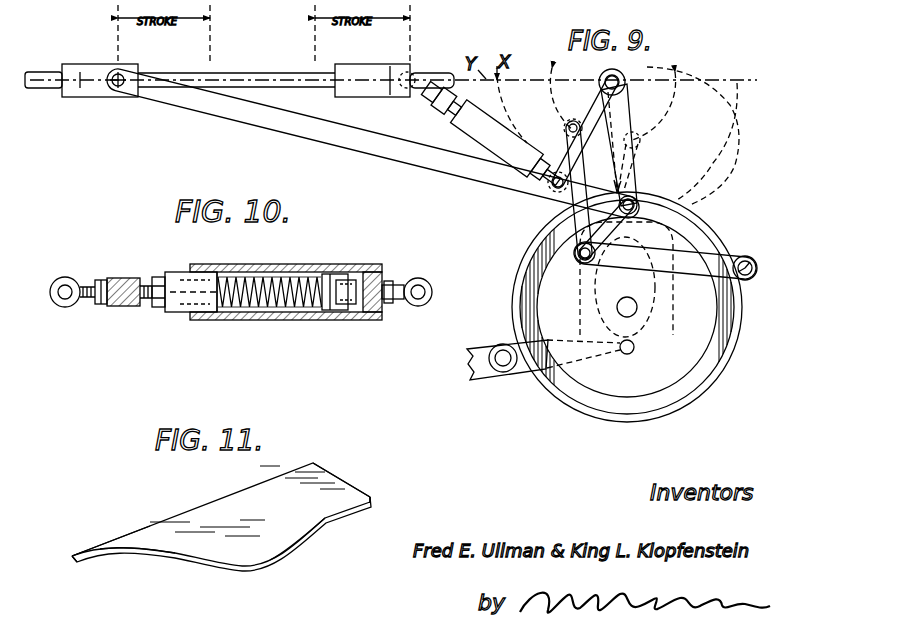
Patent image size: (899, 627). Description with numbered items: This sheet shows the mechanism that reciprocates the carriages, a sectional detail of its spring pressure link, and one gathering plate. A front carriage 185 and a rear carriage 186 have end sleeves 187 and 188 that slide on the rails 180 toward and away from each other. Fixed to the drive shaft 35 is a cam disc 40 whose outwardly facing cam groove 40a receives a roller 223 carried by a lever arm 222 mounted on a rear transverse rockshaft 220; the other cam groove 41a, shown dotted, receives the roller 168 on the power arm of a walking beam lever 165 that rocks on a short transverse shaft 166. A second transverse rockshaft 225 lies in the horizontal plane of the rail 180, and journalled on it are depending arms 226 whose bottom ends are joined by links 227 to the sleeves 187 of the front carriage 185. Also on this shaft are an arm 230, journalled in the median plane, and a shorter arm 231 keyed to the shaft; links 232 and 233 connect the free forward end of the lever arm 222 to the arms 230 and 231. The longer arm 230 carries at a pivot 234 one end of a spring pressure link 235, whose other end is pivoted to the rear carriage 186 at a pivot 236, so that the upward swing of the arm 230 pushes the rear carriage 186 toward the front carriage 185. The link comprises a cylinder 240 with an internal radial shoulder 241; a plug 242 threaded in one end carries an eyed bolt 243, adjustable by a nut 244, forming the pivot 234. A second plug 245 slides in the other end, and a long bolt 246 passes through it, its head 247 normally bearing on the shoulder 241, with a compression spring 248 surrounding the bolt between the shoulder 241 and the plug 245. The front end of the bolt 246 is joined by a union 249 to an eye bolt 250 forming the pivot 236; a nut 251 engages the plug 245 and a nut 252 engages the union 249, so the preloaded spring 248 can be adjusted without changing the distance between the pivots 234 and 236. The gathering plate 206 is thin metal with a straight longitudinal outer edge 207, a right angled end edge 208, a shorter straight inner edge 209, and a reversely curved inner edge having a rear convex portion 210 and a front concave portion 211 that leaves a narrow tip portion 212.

In FIG. 9, the front carriage 185 is at (83, 37).
In FIG. 9, the end sleeve 187 is at (86, 90).
In FIG. 9, the rail 180 is at (257, 73).
In FIG. 9, the rear carriage 186 is at (378, 40).
In FIG. 9, the end sleeve 188 is at (386, 86).
In FIG. 9, the pivotal connection 236 is at (420, 73).
In FIG. 10, the pivotal connection 236 is at (78, 279).
In FIG. 9, the link 227 is at (377, 145).
In FIG. 9, the spring pressure link 235 is at (489, 137).
In FIG. 10, the spring pressure link 235 is at (297, 320).
In FIG. 9, the pivotal connection 234 is at (552, 188).
In FIG. 10, the pivotal connection 234 is at (433, 292).
In FIG. 9, the second transverse rockshaft 225 is at (620, 78).
In FIG. 9, the arm 230 is at (585, 113).
In FIG. 9, the arm 231 is at (633, 111).
In FIG. 9, the depending arm 226 is at (634, 170).
In FIG. 9, the link 232 is at (605, 216).
In FIG. 9, the link 233 is at (575, 253).
In FIG. 9, the roller 223 is at (680, 220).
In FIG. 9, the lever arm 222 is at (720, 260).
In FIG. 9, the transverse rockshaft 220 is at (755, 262).
In FIG. 9, the cam disc 40 is at (727, 362).
In FIG. 9, the cam groove 40a is at (683, 387).
In FIG. 9, the drive shaft 35 is at (640, 307).
In FIG. 9, the cam groove 41a is at (650, 335).
In FIG. 9, the roller 168 is at (634, 355).
In FIG. 9, the walking beam lever 165 is at (466, 369).
In FIG. 9, the transverse shaft 166 is at (505, 366).
In FIG. 10, the nut 252 is at (102, 305).
In FIG. 10, the union 249 is at (128, 278).
In FIG. 10, the eye bolt 250 is at (86, 302).
In FIG. 10, the nut 251 is at (160, 307).
In FIG. 10, the second plug 245 is at (178, 274).
In FIG. 10, the cylinder 240 is at (316, 321).
In FIG. 10, the bolt 246 is at (198, 294).
In FIG. 10, the compression spring 248 is at (258, 276).
In FIG. 10, the internal radial shoulder 241 is at (323, 276).
In FIG. 10, the head 247 is at (335, 312).
In FIG. 10, the plug 242 is at (375, 274).
In FIG. 10, the nut 244 is at (394, 285).
In FIG. 10, the eyed bolt 243 is at (397, 303).
In FIG. 11, the lower gathering plate 206 is at (203, 482).
In FIG. 11, the straight longitudinal outer edge 207 is at (150, 527).
In FIG. 11, the right angled end edge 208 is at (348, 482).
In FIG. 11, the shorter straight inner edge 209 is at (352, 508).
In FIG. 11, the rear end convex portion 210 is at (287, 553).
In FIG. 11, the front end concaved portion 211 is at (140, 550).
In FIG. 11, the narrow tip portion 212 is at (75, 560).